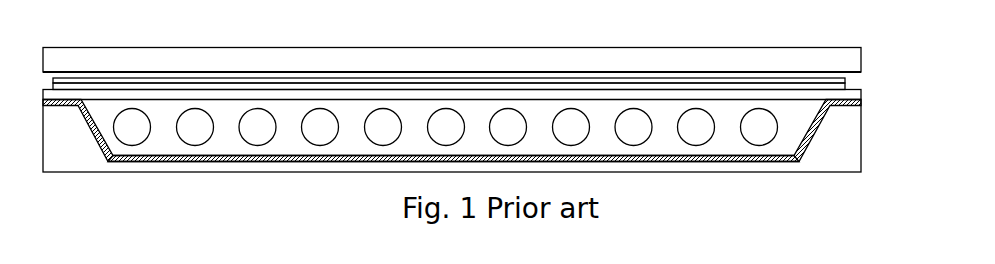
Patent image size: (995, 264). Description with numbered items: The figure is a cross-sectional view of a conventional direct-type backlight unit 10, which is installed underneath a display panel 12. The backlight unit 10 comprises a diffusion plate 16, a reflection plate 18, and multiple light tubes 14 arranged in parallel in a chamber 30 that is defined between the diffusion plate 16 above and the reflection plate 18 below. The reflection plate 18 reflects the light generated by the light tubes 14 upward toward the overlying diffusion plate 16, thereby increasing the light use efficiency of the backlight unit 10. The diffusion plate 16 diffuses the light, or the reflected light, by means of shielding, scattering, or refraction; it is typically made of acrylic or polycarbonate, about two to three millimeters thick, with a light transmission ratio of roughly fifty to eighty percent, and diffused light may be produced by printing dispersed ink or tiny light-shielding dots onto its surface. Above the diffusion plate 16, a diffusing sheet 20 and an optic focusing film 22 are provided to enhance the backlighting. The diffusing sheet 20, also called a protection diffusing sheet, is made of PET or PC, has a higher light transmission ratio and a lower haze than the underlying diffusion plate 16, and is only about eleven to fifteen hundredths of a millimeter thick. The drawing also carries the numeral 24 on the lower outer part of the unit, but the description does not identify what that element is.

The direct-type backlight unit 10 is at (869, 75).
The display panel 12 is at (68, 58).
The light tubes 14 is at (447, 127).
The diffusion plate 16 is at (347, 97).
The reflection plate 18 is at (113, 162).
The diffusing sheet 20 is at (248, 89).
The optic focusing film 22 is at (155, 80).
The bottom chassis 24 is at (803, 173).
The chamber 30 is at (349, 143).